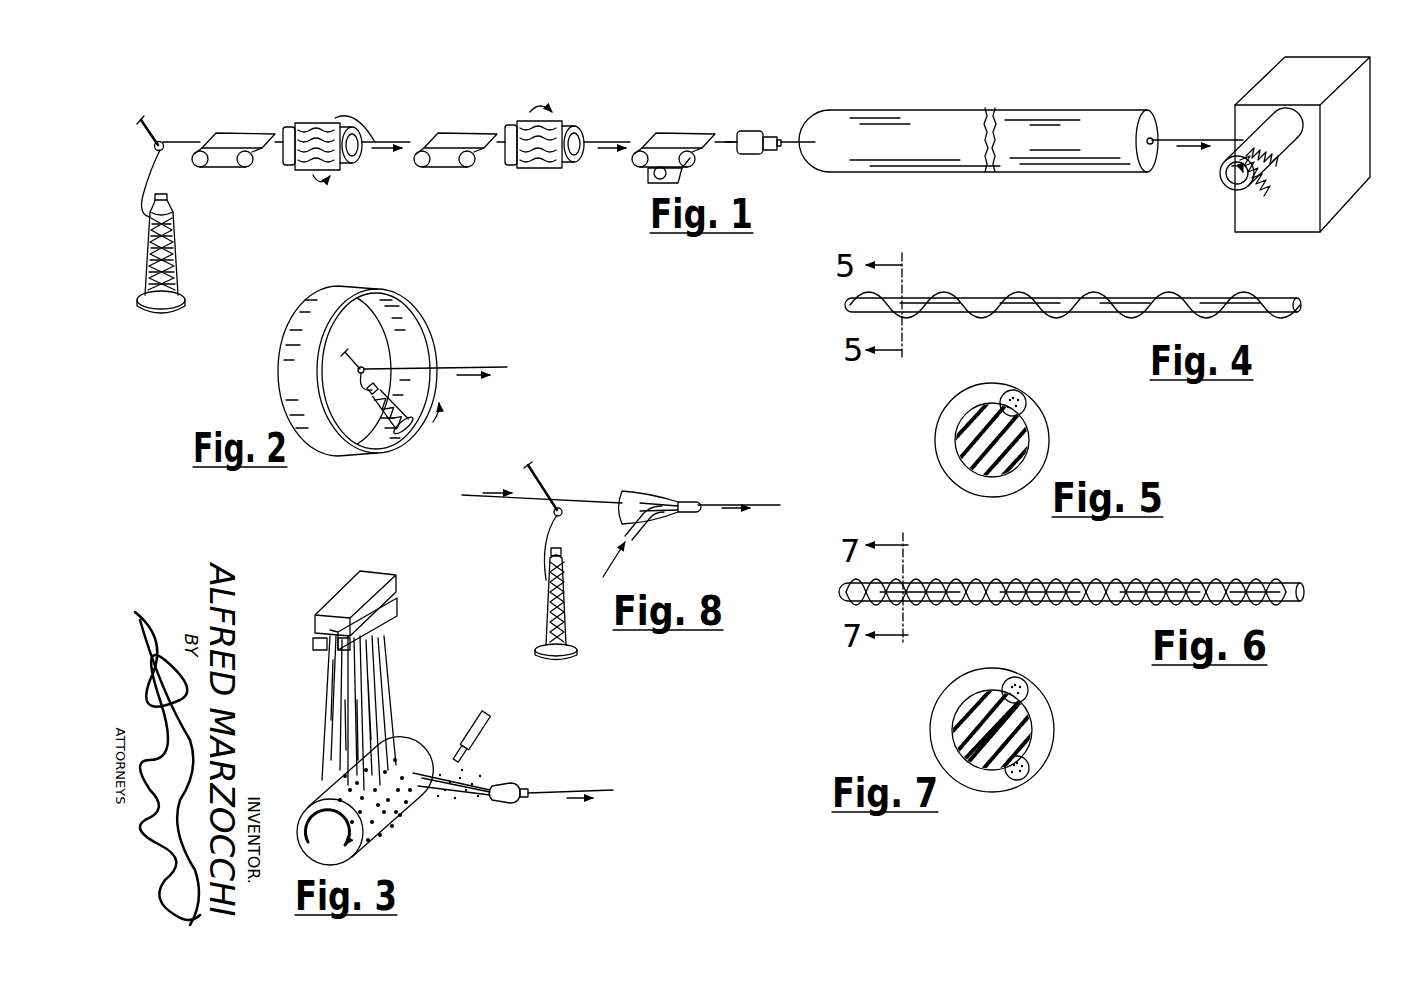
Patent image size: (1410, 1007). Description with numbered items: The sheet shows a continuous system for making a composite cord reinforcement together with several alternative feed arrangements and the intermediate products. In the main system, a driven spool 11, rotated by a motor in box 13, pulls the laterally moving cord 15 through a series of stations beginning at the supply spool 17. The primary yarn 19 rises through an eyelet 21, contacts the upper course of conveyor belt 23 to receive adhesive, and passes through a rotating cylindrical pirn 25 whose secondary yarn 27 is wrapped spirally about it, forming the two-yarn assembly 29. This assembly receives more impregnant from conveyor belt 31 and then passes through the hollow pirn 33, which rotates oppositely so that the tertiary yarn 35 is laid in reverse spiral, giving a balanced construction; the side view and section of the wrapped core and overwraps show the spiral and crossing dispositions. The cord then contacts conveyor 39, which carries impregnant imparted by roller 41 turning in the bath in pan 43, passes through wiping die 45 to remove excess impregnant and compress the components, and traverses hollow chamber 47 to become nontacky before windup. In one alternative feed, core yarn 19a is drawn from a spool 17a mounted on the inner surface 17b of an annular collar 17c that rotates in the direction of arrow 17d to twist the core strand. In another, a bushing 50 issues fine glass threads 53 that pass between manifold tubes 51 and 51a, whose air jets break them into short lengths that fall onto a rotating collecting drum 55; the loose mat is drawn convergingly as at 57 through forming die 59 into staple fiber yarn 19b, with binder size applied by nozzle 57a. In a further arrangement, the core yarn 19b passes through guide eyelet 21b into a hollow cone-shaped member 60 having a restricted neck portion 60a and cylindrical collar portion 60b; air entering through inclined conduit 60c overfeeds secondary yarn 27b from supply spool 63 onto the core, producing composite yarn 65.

In FIG. 1, the driven spool 11 is at (1222, 182).
In FIG. 1, the box 13 is at (1247, 88).
In FIG. 1, the cord 15 is at (725, 140).
In FIG. 1, the supply spool 17 is at (170, 316).
In FIG. 2, the spool 17a is at (378, 438).
In FIG. 2, the inner surface 17b is at (403, 322).
In FIG. 2, the annular collar 17c is at (333, 289).
In FIG. 2, the arrow 17d is at (367, 452).
In FIG. 1, the primary yarn 19 is at (152, 160).
In FIG. 4, the primary yarn 19 is at (1010, 297).
In FIG. 5, the primary yarn 19 is at (1023, 420).
In FIG. 6, the primary yarn 19 is at (1193, 590).
In FIG. 7, the primary yarn 19 is at (1033, 723).
In FIG. 2, the core yarn 19a is at (473, 365).
In FIG. 3, the staple fiber yarn 19b is at (560, 790).
In FIG. 8, the staple fiber yarn 19b is at (510, 497).
In FIG. 1, the eyelet 21 is at (180, 98).
In FIG. 8, the guide eyelet 21b is at (565, 508).
In FIG. 1, the conveyor belt 23 is at (240, 132).
In FIG. 1, the cylindrical pirn 25 is at (305, 112).
In FIG. 1, the secondary yarn 27 is at (360, 95).
In FIG. 4, the secondary yarn 27 is at (1042, 296).
In FIG. 5, the secondary yarn 27 is at (1022, 398).
In FIG. 6, the secondary yarn 27 is at (1045, 556).
In FIG. 7, the secondary yarn 27 is at (1027, 682).
In FIG. 8, the secondary yarn 27b is at (537, 548).
In FIG. 1, the two-yarn assembly 29 is at (410, 108).
In FIG. 4, the two-yarn assembly 29 is at (1105, 290).
In FIG. 1, the conveyor belt 31 is at (482, 132).
In FIG. 1, the hollow pirn 33 is at (596, 100).
In FIG. 1, the tertiary yarn 35 is at (575, 165).
In FIG. 6, the tertiary yarn 35 is at (1180, 560).
In FIG. 7, the tertiary yarn 35 is at (1030, 770).
In FIG. 1, the conveyor 39 is at (678, 130).
In FIG. 1, the roller 41 is at (660, 180).
In FIG. 1, the pan 43 is at (648, 172).
In FIG. 1, the wiping die 45 is at (772, 98).
In FIG. 1, the hollow chamber 47 is at (905, 107).
In FIG. 3, the bushing 50 is at (393, 578).
In FIG. 3, the manifold tube 51 is at (313, 650).
In FIG. 3, the manifold tube 51a is at (397, 617).
In FIG. 3, the threads of glass 53 is at (367, 683).
In FIG. 3, the collecting drum 55 is at (380, 830).
In FIG. 3, the converging draw 57 is at (427, 800).
In FIG. 3, the nozzle 57a is at (473, 743).
In FIG. 3, the forming die 59 is at (536, 752).
In FIG. 8, the cone-shaped member 60 is at (652, 490).
In FIG. 8, the restricted neck portion 60a is at (690, 500).
In FIG. 8, the cylindrical collar portion 60b is at (698, 500).
In FIG. 8, the inclined conduit 60c is at (665, 512).
In FIG. 8, the supply spool 63 is at (580, 660).
In FIG. 8, the composite yarn 65 is at (760, 503).